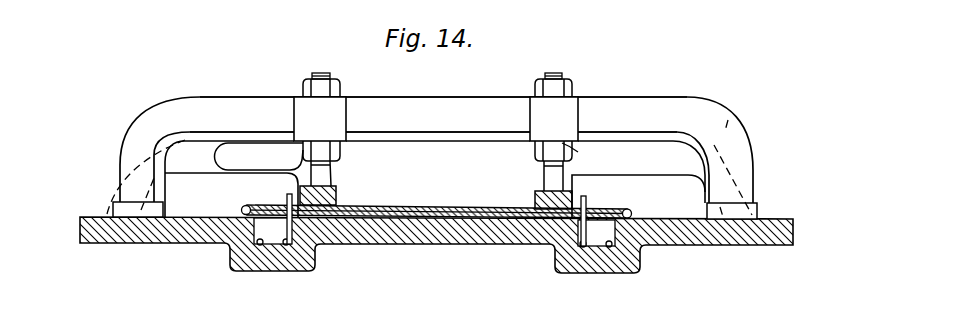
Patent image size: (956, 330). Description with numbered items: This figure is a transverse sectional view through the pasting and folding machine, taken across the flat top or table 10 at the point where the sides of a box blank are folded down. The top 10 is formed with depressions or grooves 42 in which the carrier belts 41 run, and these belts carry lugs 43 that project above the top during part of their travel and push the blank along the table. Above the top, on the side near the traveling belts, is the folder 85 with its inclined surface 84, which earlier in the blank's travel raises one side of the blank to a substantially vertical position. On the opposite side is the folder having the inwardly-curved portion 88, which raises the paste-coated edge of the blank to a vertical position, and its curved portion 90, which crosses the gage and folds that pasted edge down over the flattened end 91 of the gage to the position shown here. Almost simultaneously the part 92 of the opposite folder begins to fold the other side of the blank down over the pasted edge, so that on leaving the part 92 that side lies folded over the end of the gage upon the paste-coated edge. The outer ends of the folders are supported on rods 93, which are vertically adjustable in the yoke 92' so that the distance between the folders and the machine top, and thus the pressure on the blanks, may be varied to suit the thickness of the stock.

The flat top or table 10 is at (408, 240).
The belts 41 is at (589, 239).
The depressions or grooves 42 is at (262, 229).
The lugs 43 is at (287, 197).
The inclined surface 84 is at (193, 162).
The folder 85 is at (114, 199).
The inwardly-curved portion 88 is at (435, 179).
The curved portion 90 is at (536, 198).
The flattened end of the gage 91 is at (241, 210).
The part of the opposite folder 92 is at (259, 156).
The yoke 92' is at (438, 119).
The rods 93 is at (321, 178).